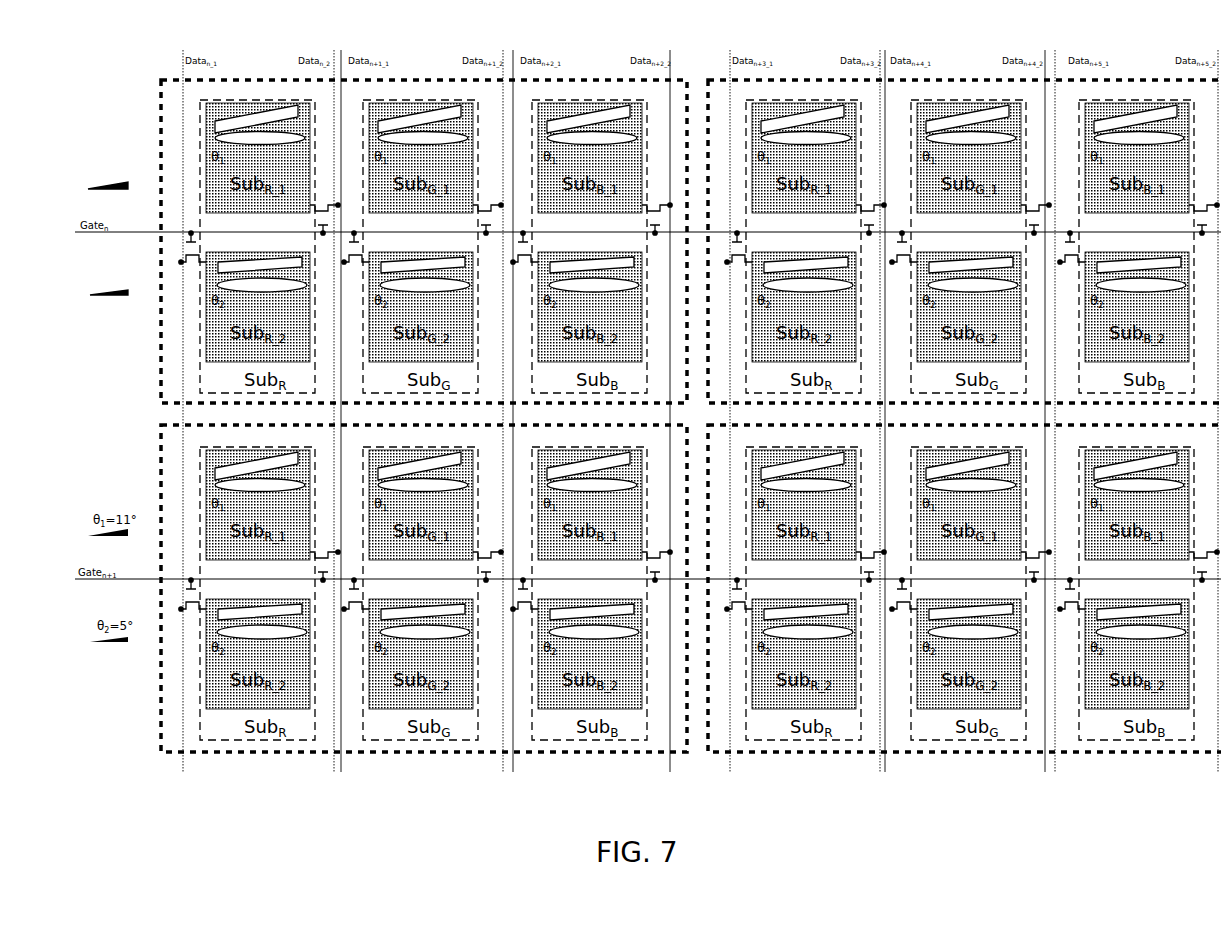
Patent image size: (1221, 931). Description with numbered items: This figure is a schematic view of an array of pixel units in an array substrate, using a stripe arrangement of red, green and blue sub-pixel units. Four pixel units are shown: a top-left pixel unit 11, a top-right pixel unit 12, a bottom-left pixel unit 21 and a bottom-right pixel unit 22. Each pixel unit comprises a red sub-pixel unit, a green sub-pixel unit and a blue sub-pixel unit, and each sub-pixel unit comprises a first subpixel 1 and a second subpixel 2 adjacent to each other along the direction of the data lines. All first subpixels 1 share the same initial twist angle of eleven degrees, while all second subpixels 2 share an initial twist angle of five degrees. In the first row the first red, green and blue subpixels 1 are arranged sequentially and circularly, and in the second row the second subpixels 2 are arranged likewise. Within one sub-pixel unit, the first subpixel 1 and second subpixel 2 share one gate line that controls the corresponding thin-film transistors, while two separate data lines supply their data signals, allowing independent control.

The first subpixel 1 is at (112, 177).
The second subpixel 2 is at (111, 283).
The pixel unit Pixel1,1 11 is at (397, 75).
The pixel unit Pixel1,2 12 is at (949, 76).
The pixel unit Pixel2,1 21 is at (413, 752).
The pixel unit Pixel2,2 22 is at (1003, 752).